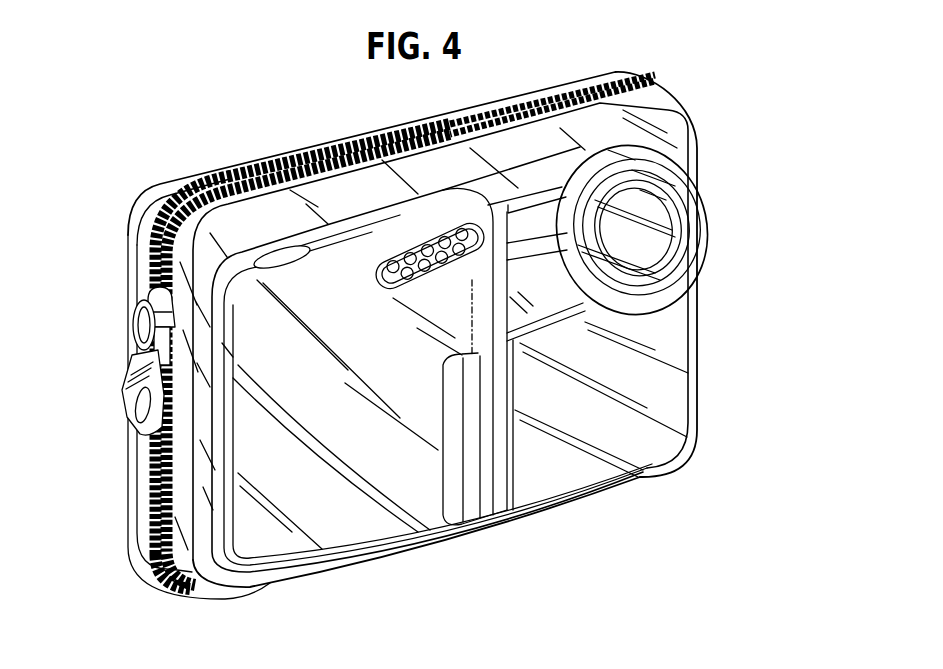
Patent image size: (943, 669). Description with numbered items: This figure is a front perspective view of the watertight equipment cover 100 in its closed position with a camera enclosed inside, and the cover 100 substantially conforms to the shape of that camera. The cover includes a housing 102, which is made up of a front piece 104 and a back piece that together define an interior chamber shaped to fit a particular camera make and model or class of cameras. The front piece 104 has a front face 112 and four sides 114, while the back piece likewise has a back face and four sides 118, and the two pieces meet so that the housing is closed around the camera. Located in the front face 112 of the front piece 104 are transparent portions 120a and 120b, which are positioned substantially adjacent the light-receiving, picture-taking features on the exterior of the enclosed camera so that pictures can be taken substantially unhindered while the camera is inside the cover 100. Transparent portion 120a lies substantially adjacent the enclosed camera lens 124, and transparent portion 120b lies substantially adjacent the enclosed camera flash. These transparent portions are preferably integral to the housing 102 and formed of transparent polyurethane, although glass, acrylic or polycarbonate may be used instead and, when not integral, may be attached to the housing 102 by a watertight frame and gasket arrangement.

The watertight equipment cover 100 is at (716, 113).
The housing 102 is at (708, 147).
The front piece 104 is at (680, 408).
The front face 112 is at (605, 419).
The sides 114 is at (464, 144).
The sides 118 is at (311, 147).
The transparent portion 120a is at (699, 272).
The transparent portion 120b is at (420, 244).
The camera lens 124 is at (674, 222).